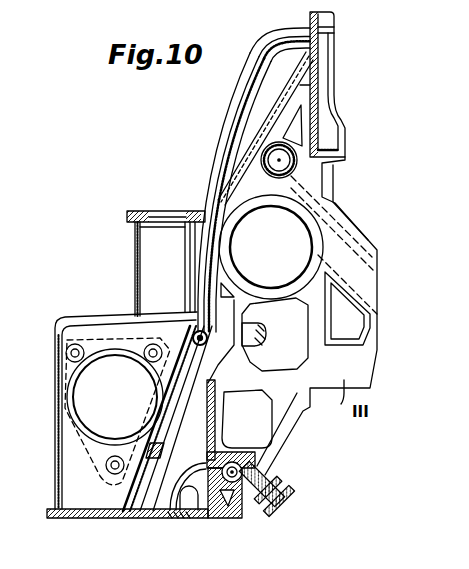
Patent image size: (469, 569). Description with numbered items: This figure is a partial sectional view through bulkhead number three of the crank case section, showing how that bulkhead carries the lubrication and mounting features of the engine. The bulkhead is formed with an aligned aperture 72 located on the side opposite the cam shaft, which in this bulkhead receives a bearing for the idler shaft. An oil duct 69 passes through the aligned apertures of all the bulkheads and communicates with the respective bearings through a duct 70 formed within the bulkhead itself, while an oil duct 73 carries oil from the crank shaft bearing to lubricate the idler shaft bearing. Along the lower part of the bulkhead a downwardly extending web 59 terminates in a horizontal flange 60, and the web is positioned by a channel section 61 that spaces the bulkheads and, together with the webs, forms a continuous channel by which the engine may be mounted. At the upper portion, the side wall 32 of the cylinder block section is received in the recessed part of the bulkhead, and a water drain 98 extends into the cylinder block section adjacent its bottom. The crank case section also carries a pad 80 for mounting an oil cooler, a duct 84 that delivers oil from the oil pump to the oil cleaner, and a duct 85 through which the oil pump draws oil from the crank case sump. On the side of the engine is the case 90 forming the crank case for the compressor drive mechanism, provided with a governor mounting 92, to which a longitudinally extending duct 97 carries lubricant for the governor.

The side wall 32 is at (316, 72).
The pad 80 is at (265, 57).
The water drain 98 is at (233, 109).
The oil duct 69 is at (262, 153).
The aligned aperture 72 is at (244, 222).
The duct 70 is at (326, 210).
The oil duct 73 is at (337, 257).
The governor mounting 92 is at (146, 210).
The longitudinally extending duct 97 is at (185, 282).
The case 90 is at (56, 466).
The duct 84 is at (138, 513).
The duct 85 is at (183, 514).
The web 59 is at (241, 464).
The horizontal flange 60 is at (213, 518).
The channel section 61 is at (218, 426).